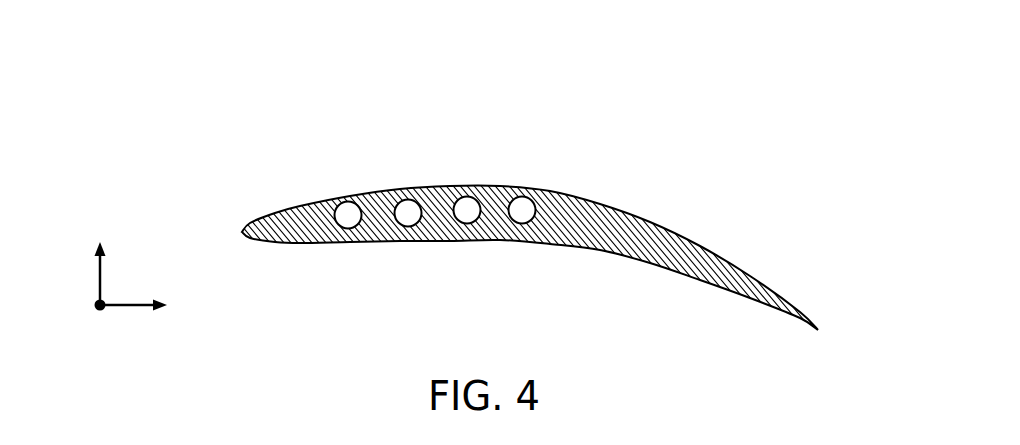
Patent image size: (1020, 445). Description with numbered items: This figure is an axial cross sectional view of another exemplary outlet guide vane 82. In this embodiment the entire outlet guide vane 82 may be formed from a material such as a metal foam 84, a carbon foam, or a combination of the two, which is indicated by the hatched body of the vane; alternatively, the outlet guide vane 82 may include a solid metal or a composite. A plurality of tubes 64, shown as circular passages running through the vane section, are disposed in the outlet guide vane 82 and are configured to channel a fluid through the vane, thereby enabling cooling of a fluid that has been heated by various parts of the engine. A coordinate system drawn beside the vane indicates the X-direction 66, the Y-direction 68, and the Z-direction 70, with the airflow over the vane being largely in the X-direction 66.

The outlet guide vane 82 is at (760, 138).
The metal foam 84 is at (598, 217).
The tubes 64 is at (465, 210).
The X-direction 66 is at (160, 312).
The Y-direction 68 is at (107, 243).
The Z-direction 70 is at (97, 314).